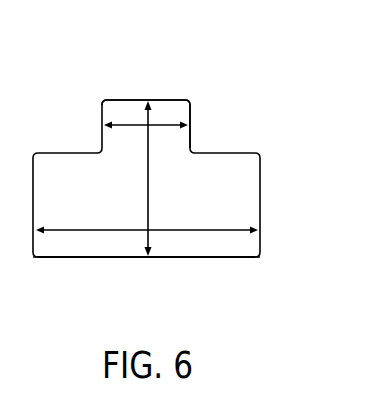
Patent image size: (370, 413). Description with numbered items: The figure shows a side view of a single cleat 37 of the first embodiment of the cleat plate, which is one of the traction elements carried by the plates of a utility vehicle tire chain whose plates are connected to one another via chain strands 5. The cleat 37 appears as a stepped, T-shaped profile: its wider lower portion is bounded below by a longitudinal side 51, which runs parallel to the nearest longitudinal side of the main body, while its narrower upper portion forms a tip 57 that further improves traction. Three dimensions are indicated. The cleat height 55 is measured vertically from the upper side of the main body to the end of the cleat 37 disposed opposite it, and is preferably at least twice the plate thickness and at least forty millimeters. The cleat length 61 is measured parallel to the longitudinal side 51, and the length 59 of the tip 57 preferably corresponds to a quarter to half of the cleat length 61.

The cleat 37 is at (255, 276).
The tip 57 is at (193, 81).
The longitudinal side of cleat 51 is at (197, 260).
The chain strand 5 is at (133, 262).
The length of tip 59 is at (130, 124).
The cleat height 55 is at (149, 190).
The cleat length 61 is at (70, 232).